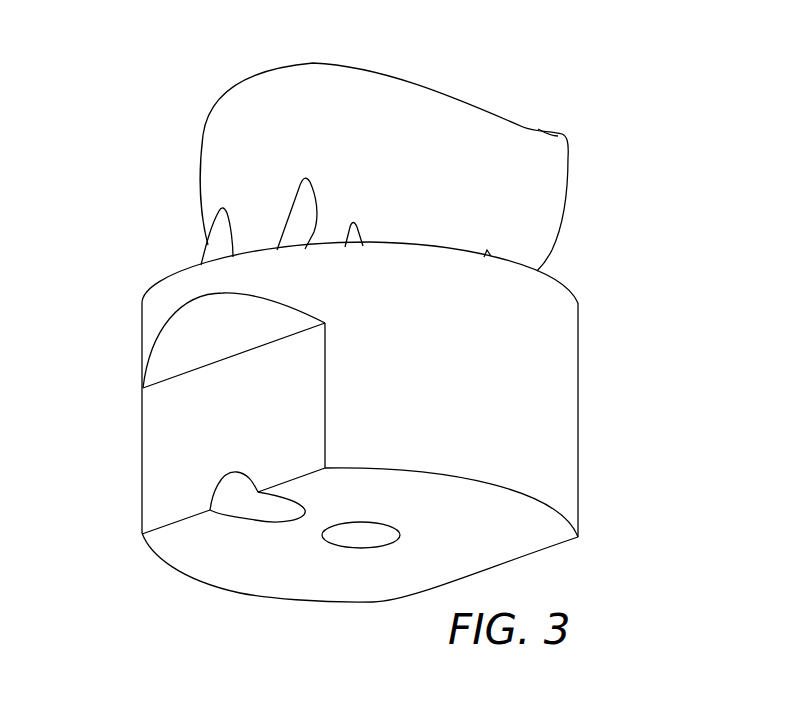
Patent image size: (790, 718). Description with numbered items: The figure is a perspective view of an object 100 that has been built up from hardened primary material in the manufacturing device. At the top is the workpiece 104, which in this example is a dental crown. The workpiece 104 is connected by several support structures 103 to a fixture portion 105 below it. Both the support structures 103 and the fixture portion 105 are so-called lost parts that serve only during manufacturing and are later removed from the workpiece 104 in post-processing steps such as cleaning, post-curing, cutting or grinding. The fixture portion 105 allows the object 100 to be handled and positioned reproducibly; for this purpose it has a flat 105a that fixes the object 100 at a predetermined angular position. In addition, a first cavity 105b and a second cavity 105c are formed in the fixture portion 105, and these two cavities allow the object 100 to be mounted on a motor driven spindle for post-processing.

The object 100 is at (613, 98).
The support structures 103 is at (300, 215).
The workpiece 104 is at (547, 203).
The fixture portion 105 is at (358, 449).
The flat 105a is at (158, 460).
The first cavity 105b is at (352, 538).
The second cavity 105c is at (227, 503).